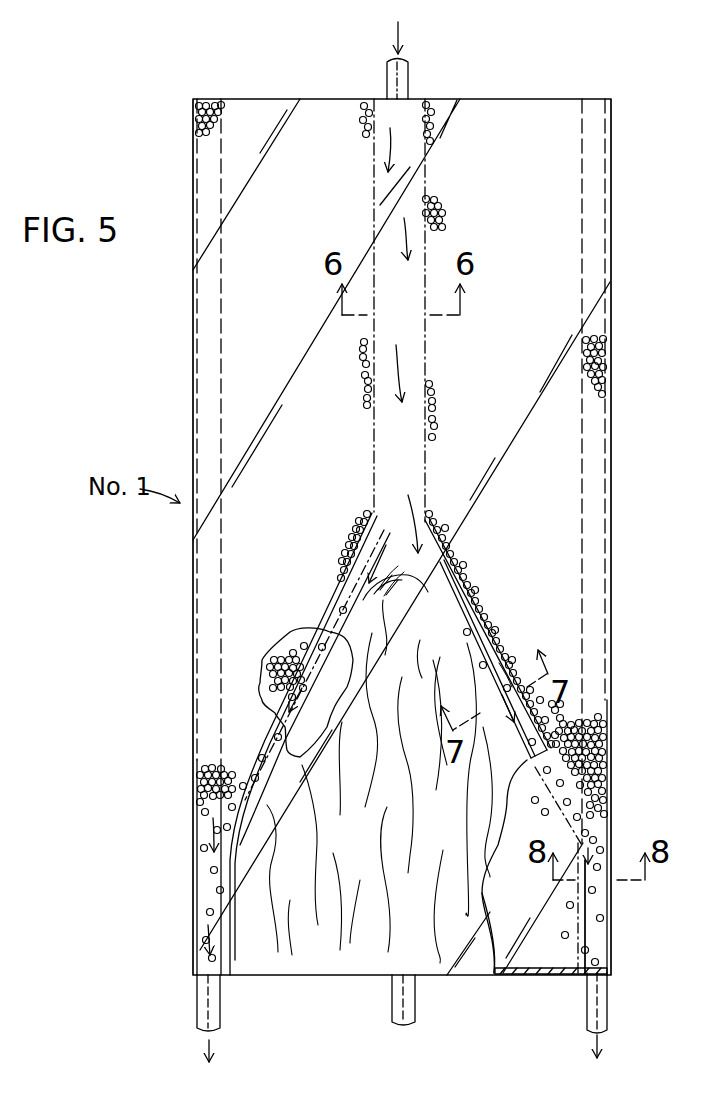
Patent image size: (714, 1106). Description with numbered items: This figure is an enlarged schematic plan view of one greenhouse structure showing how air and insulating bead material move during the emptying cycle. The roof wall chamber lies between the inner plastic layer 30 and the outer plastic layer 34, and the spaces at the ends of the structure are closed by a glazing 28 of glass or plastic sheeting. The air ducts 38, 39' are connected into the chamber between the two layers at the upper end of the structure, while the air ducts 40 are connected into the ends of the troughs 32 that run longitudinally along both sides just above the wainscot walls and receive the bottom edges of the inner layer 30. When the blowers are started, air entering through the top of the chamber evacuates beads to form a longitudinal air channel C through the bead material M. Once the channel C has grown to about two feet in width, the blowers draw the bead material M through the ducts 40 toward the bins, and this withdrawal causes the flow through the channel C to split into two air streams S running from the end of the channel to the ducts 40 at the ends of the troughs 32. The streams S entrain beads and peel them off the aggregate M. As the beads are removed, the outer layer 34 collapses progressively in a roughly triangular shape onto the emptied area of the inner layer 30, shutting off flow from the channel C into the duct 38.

The air duct 39' is at (435, 60).
The outer plastic layer 34 is at (321, 453).
The air duct 38 is at (392, 1005).
The inner plastic layer 30 is at (526, 955).
The glazing 28 is at (553, 977).
The air duct 40 is at (220, 1018).
The trough 32 is at (600, 910).
The air stream S is at (316, 650).
The air channel C is at (440, 404).
The bead material M is at (612, 758).